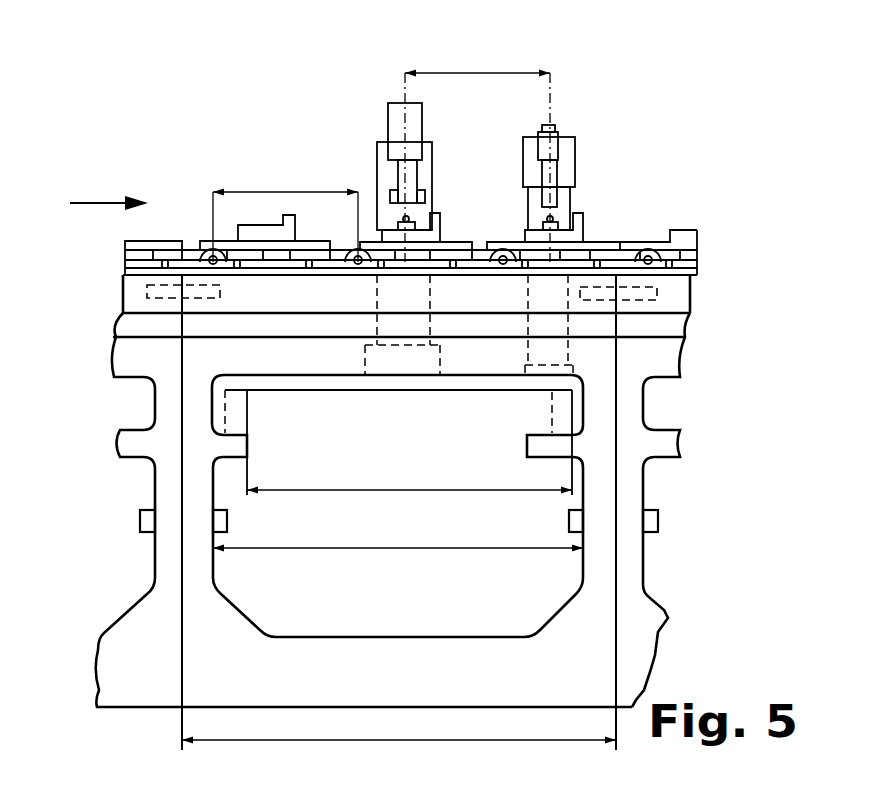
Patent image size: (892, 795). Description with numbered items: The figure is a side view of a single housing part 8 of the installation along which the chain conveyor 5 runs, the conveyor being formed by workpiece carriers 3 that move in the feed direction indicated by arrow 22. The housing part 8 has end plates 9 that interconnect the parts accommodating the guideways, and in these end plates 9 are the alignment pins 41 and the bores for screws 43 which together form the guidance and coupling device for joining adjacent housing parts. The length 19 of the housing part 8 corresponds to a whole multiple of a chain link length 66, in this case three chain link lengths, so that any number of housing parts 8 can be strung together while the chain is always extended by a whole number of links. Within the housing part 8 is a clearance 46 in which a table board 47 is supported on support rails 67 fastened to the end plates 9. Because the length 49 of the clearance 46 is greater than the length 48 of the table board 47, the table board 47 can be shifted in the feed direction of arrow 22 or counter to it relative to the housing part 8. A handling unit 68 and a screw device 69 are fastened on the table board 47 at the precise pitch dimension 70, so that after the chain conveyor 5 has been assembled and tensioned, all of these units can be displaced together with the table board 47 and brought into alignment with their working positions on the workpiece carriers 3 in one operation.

The workpiece carrier 3 is at (576, 258).
The chain conveyor 5 is at (635, 213).
The housing part 8 is at (220, 648).
The end plate 9 is at (598, 552).
The length of the housing part 19 is at (252, 737).
The feed direction arrow 22 is at (84, 203).
The alignment pin 41 is at (157, 287).
The screw 43 is at (222, 522).
The clearance 46 is at (505, 585).
The table board 47 is at (487, 418).
The length of the table board 48 is at (505, 490).
The length of the clearance 49 is at (533, 547).
The chain link length 66 is at (250, 192).
The support rail 67 is at (545, 443).
The handling unit 68 is at (395, 130).
The screw device 69 is at (567, 168).
The pitch dimension 70 is at (408, 73).